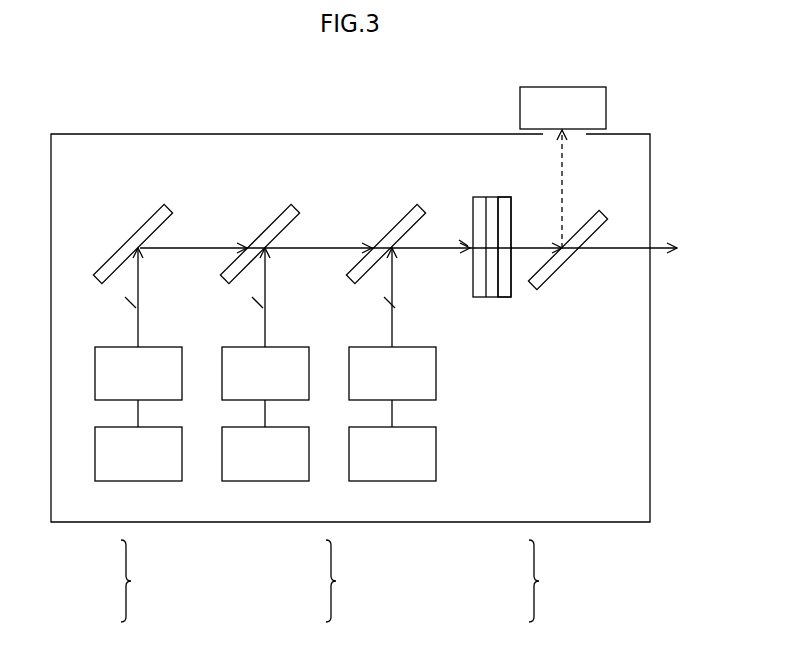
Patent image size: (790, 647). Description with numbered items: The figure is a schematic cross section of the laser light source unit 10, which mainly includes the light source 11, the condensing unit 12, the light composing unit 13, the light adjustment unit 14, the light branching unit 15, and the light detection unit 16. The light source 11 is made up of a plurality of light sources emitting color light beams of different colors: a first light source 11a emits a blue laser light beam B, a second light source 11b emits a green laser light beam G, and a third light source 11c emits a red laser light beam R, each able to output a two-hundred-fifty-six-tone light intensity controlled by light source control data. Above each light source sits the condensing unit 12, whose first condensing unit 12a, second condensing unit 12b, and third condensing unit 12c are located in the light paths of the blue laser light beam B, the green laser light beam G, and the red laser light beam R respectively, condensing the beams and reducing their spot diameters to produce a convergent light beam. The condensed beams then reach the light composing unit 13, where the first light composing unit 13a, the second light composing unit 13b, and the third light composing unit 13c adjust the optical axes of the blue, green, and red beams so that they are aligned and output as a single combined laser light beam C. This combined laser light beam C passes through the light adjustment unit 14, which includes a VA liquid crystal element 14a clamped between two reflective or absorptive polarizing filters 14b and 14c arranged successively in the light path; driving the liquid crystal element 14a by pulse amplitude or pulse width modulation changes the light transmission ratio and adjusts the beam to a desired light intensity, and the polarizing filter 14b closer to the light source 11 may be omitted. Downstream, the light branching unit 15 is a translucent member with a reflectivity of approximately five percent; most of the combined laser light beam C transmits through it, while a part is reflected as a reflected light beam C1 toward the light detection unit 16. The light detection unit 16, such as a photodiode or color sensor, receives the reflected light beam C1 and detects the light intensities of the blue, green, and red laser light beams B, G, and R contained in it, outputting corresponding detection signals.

The laser light source unit 10 is at (216, 120).
The first light source 11a is at (150, 481).
The second light source 11b is at (277, 481).
The third light source 11c is at (404, 481).
The light source 11 is at (179, 580).
The first condensing unit 12a is at (150, 347).
The second condensing unit 12b is at (277, 347).
The third condensing unit 12c is at (404, 347).
The condensing unit 12 is at (379, 580).
The first light composing unit 13a is at (136, 222).
The second light composing unit 13b is at (263, 222).
The third light composing unit 13c is at (389, 222).
The light composing unit 13 is at (612, 580).
The light adjustment unit 14 is at (497, 183).
The liquid crystal element 14a is at (479, 297).
The polarizing filter 14b is at (490, 197).
The polarizing filter 14c is at (505, 297).
The light branching unit 15 is at (552, 285).
The light detection unit 16 is at (521, 88).
The combined laser light beam C is at (456, 232).
The reflected light beam C1 is at (565, 193).
The blue laser light beam B is at (122, 297).
The green laser light beam G is at (249, 297).
The red laser light beam R is at (381, 297).